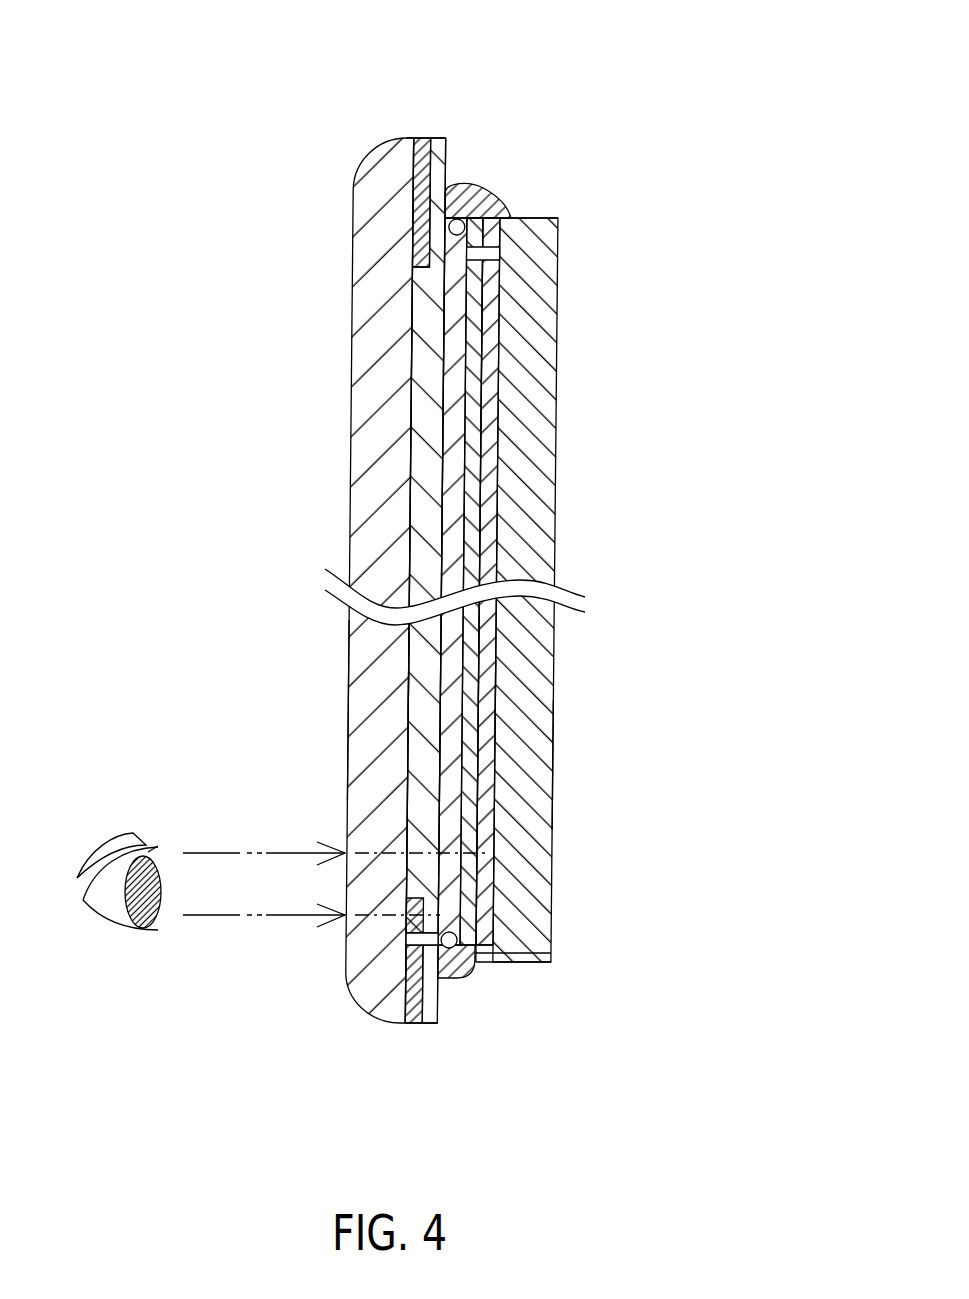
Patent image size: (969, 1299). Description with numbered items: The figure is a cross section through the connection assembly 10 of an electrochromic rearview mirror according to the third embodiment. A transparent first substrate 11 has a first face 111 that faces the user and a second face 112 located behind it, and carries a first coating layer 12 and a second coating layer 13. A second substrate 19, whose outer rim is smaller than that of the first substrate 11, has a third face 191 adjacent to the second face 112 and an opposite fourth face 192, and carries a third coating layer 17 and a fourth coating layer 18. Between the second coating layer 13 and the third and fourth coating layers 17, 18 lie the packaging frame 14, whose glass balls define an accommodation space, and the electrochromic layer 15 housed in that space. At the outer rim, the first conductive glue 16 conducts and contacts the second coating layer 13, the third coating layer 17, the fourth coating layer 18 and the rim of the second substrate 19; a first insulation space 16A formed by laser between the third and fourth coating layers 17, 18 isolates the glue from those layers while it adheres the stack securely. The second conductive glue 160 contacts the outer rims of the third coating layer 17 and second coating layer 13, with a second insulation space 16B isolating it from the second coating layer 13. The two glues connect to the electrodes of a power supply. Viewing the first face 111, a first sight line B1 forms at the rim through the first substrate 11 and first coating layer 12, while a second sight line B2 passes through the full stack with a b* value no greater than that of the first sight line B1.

The connection assembly 10 is at (358, 128).
The first substrate 11 is at (358, 322).
The first face 111 is at (347, 712).
The second face 112 is at (408, 690).
The first coating layer 12 is at (406, 216).
The second coating layer 13 is at (418, 368).
The packaging frame 14 is at (459, 236).
The electrochromic layer 15 is at (450, 440).
The first conductive glue 16 is at (470, 187).
The first insulation space 16A is at (493, 252).
The second insulation space 16B is at (422, 1025).
The second conductive glue 160 is at (456, 977).
The third coating layer 17 is at (475, 457).
The fourth coating layer 18 is at (492, 380).
The second substrate 19 is at (533, 307).
The third face 191 is at (493, 723).
The fourth face 192 is at (557, 762).
The first sight line B1 is at (390, 917).
The second sight line B2 is at (371, 856).